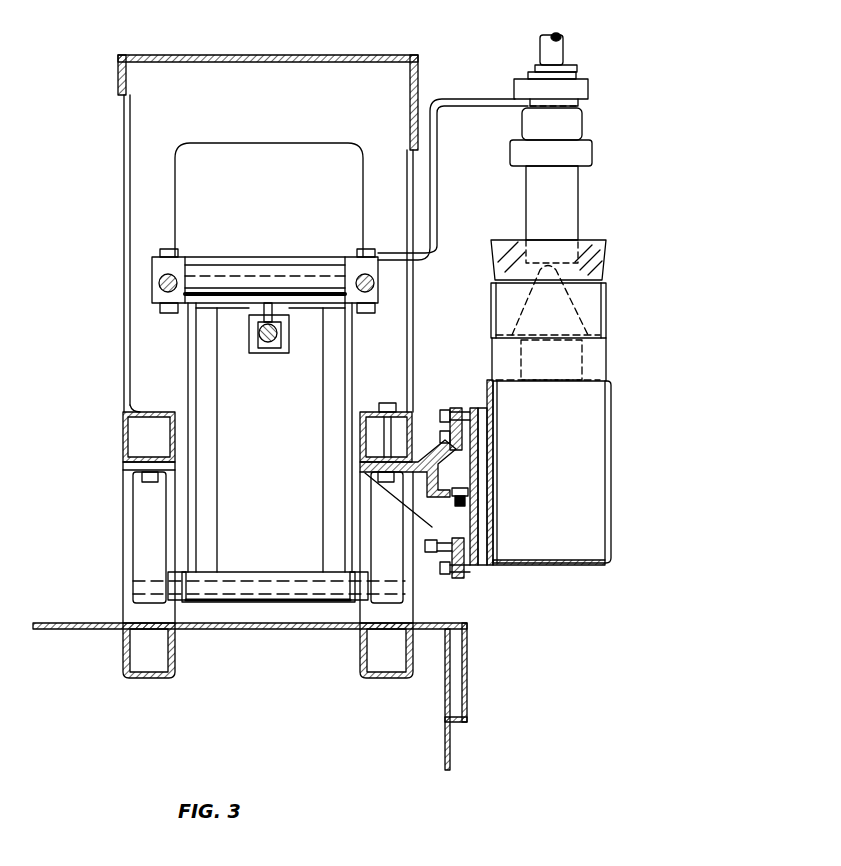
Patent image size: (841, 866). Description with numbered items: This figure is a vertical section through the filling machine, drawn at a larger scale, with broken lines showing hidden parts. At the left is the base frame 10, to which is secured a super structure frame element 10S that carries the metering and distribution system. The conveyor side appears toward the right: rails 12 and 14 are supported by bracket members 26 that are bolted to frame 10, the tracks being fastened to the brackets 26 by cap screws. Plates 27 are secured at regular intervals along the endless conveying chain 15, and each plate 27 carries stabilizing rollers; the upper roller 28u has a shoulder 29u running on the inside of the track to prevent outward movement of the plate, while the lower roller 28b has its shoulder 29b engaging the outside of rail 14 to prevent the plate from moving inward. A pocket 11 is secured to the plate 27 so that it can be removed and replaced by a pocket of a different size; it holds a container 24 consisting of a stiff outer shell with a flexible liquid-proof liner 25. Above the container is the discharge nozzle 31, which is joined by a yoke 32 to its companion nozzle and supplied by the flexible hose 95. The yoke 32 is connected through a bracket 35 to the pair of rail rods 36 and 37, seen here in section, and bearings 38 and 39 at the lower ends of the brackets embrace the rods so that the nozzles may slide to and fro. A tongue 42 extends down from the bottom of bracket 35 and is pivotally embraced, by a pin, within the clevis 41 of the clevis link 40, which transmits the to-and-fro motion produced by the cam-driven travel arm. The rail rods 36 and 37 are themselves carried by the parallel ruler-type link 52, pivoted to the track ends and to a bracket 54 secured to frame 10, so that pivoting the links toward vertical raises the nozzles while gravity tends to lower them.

The super structure frame element 10S is at (228, 56).
The frame 10 is at (124, 434).
The pocket 11 is at (586, 568).
The rail 12 is at (465, 451).
The rail 14 is at (440, 560).
The endless conveying chain 15 is at (458, 510).
The container 24 is at (570, 477).
The flexible liquid-proof liner 25 is at (596, 250).
The bracket member 26 is at (428, 512).
The plate 27 is at (482, 543).
The upper stabilizing roller 28u is at (458, 410).
The lower stabilizing roller 28b is at (447, 577).
The shoulder 29u is at (448, 408).
The shoulder 29b is at (462, 580).
The discharge nozzle 31 is at (565, 200).
The yoke 32 is at (590, 89).
The bracket 35 is at (440, 181).
The rail rod 36 is at (380, 292).
The rail rod 37 is at (152, 283).
The bearing 38 is at (380, 278).
The bearing 39 is at (152, 275).
The clevis link 40 is at (272, 348).
The clevis 41 is at (283, 328).
The tongue 42 is at (262, 313).
The parallel ruler-type link 52 is at (205, 424).
The bracket 54 is at (140, 540).
The flexible hose 95 is at (556, 50).